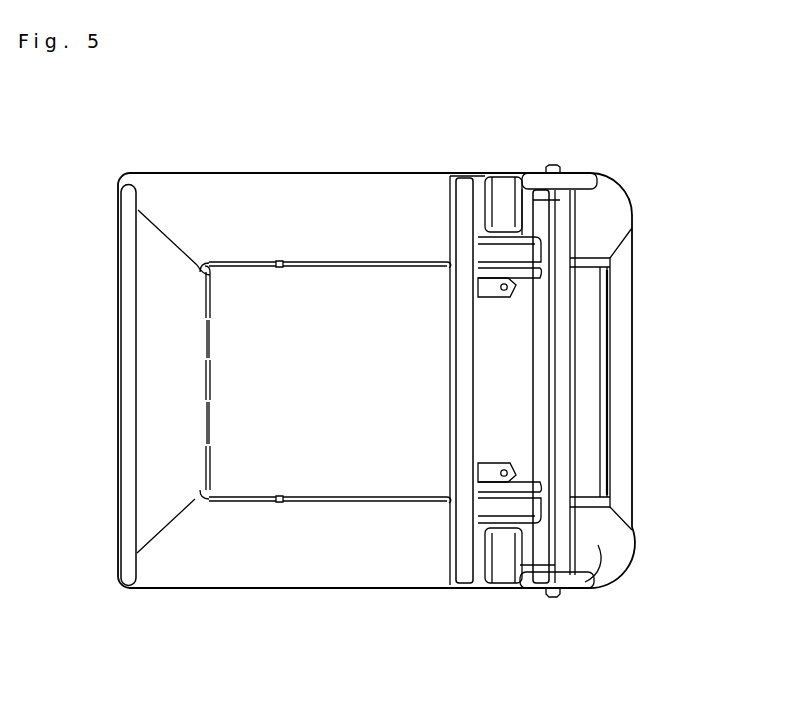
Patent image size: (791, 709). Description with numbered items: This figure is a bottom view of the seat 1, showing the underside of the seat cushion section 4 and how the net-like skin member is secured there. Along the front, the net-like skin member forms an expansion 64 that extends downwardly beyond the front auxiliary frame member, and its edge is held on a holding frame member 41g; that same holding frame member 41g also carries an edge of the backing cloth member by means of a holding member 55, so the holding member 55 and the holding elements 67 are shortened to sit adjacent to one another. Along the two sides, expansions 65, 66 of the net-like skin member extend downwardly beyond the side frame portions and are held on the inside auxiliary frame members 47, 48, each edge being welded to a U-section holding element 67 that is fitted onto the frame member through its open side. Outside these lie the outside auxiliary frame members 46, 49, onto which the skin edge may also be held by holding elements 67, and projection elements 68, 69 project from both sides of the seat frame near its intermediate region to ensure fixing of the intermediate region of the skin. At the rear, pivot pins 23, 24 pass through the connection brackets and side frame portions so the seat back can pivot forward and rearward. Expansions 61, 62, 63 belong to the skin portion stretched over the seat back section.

The seat 1 is at (676, 250).
The seat cushion section 4 is at (124, 430).
The pivot pin 23 is at (554, 597).
The pivot pin 24 is at (553, 166).
The holding frame member 41g is at (212, 276).
The outside auxiliary frame member 46 is at (520, 522).
The inside auxiliary frame member 47 is at (280, 496).
The inside auxiliary frame member 48 is at (284, 268).
The outside auxiliary frame member 49 is at (525, 233).
The holding member 55 is at (214, 338).
The expansion 61 is at (630, 344).
The expansion 62 is at (610, 549).
The expansion 63 is at (604, 203).
The expansion 64 is at (150, 350).
The expansion 65 is at (298, 560).
The expansion 66 is at (292, 200).
The holding element 67 is at (216, 305).
The projection element 68 is at (500, 575).
The projection element 69 is at (510, 190).